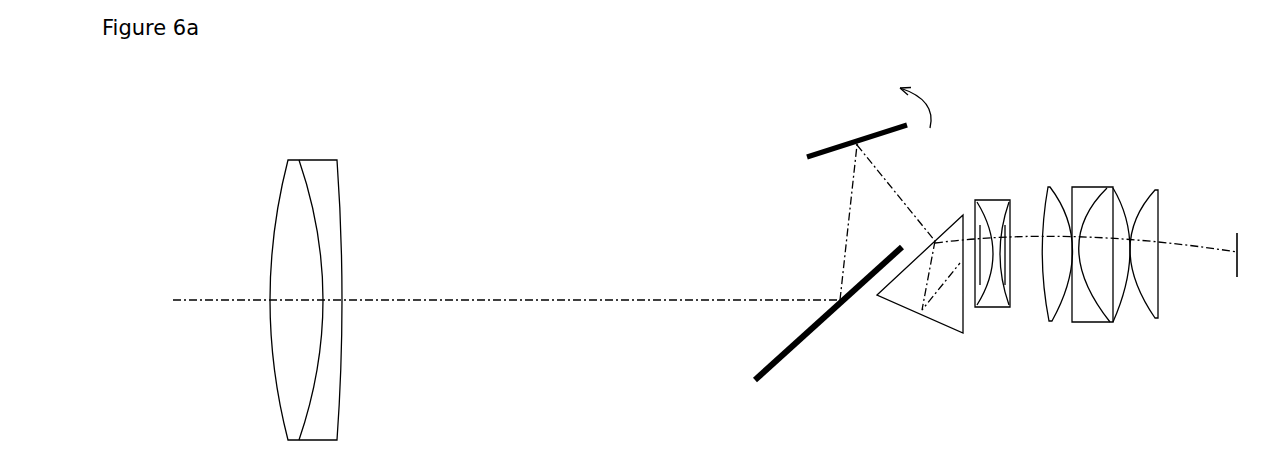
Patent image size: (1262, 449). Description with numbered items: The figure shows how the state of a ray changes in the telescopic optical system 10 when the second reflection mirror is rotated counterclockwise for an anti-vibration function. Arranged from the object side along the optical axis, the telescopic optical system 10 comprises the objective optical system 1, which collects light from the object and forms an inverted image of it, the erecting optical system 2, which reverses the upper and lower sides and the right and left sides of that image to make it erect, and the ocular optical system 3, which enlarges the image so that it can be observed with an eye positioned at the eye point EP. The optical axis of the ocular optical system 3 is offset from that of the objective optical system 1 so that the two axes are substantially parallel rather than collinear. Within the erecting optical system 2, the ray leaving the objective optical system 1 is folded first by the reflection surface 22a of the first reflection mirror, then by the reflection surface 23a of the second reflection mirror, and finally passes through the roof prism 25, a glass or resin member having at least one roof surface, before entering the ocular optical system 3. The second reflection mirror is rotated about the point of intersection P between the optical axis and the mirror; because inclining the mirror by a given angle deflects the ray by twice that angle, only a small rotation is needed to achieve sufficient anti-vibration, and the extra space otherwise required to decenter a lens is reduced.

The objective optical system 1 is at (263, 143).
The erecting optical system 2 is at (963, 78).
The ocular optical system 3 is at (1162, 170).
The telescopic optical system 10 is at (1072, 97).
The reflection surface 22a is at (762, 368).
The reflection surface 23a is at (817, 156).
The roof prism 25 is at (953, 323).
The point of intersection P is at (855, 130).
The eye point EP is at (1237, 233).